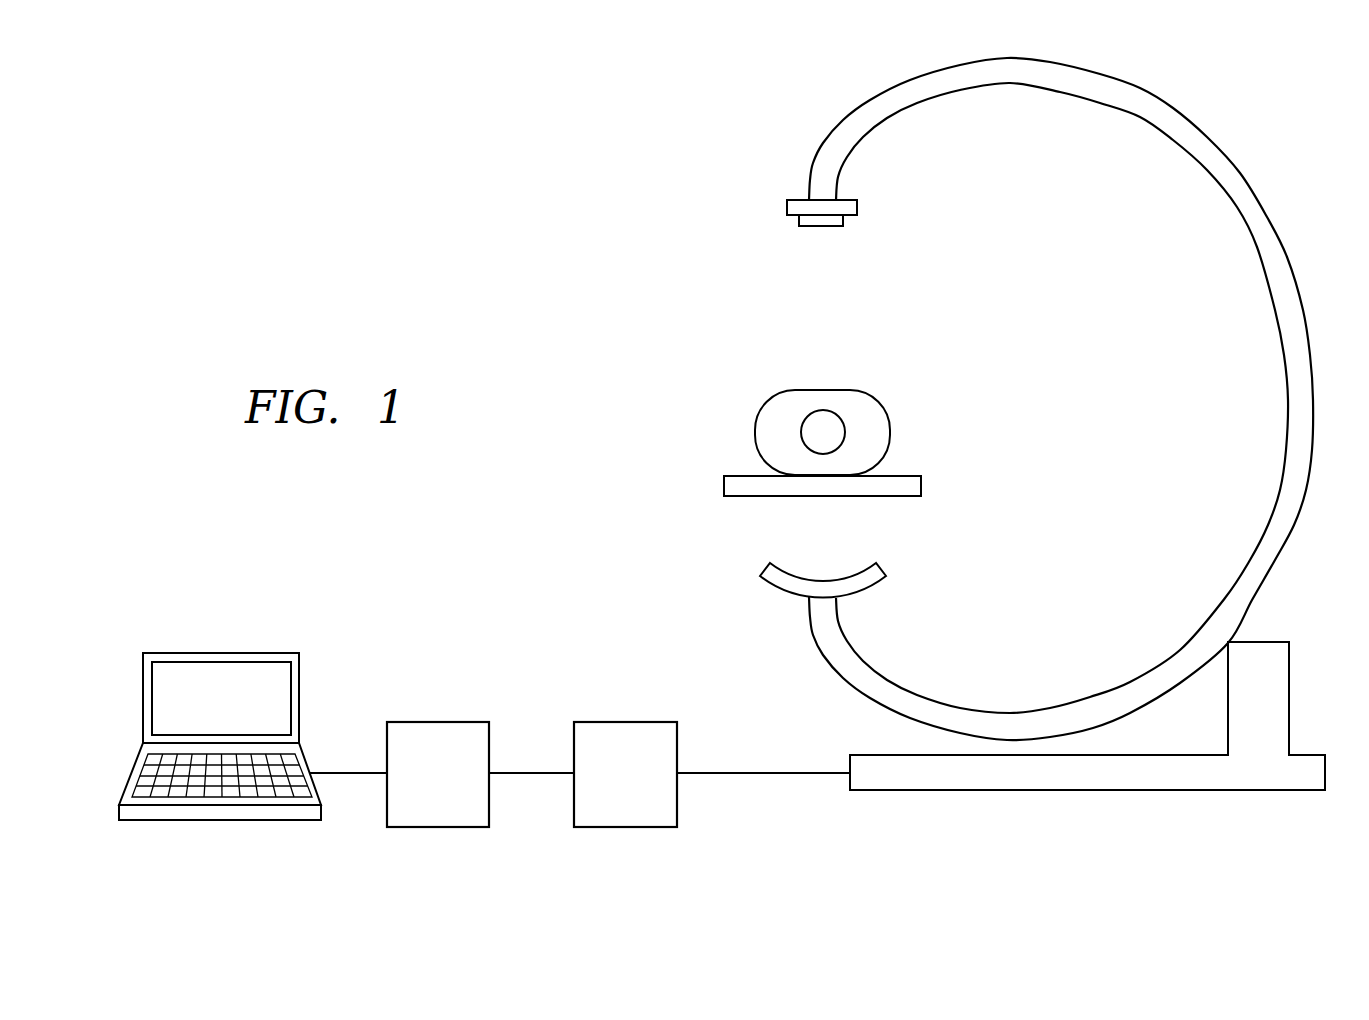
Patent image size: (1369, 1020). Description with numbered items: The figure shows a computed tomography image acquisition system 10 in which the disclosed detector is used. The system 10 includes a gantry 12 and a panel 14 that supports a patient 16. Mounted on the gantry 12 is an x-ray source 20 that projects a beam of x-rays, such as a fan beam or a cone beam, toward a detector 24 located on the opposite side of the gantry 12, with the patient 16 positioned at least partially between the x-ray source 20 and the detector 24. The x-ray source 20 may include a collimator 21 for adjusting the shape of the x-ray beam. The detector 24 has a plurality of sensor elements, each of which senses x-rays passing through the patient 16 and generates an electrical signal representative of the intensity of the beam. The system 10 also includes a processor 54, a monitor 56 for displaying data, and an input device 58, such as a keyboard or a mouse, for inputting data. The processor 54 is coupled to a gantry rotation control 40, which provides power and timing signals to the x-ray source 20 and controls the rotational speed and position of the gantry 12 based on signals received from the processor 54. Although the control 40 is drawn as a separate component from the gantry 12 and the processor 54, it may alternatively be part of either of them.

The computed tomography image acquisition system 10 is at (1229, 90).
The gantry 12 is at (1293, 317).
The panel 14 is at (921, 486).
The patient 16 is at (868, 394).
The x-ray source 20 is at (858, 208).
The collimator 21 is at (845, 227).
The detector 24 is at (886, 568).
The gantry rotation control 40 is at (610, 786).
The processor 54 is at (421, 786).
The monitor 56 is at (300, 683).
The input device 58 is at (212, 820).